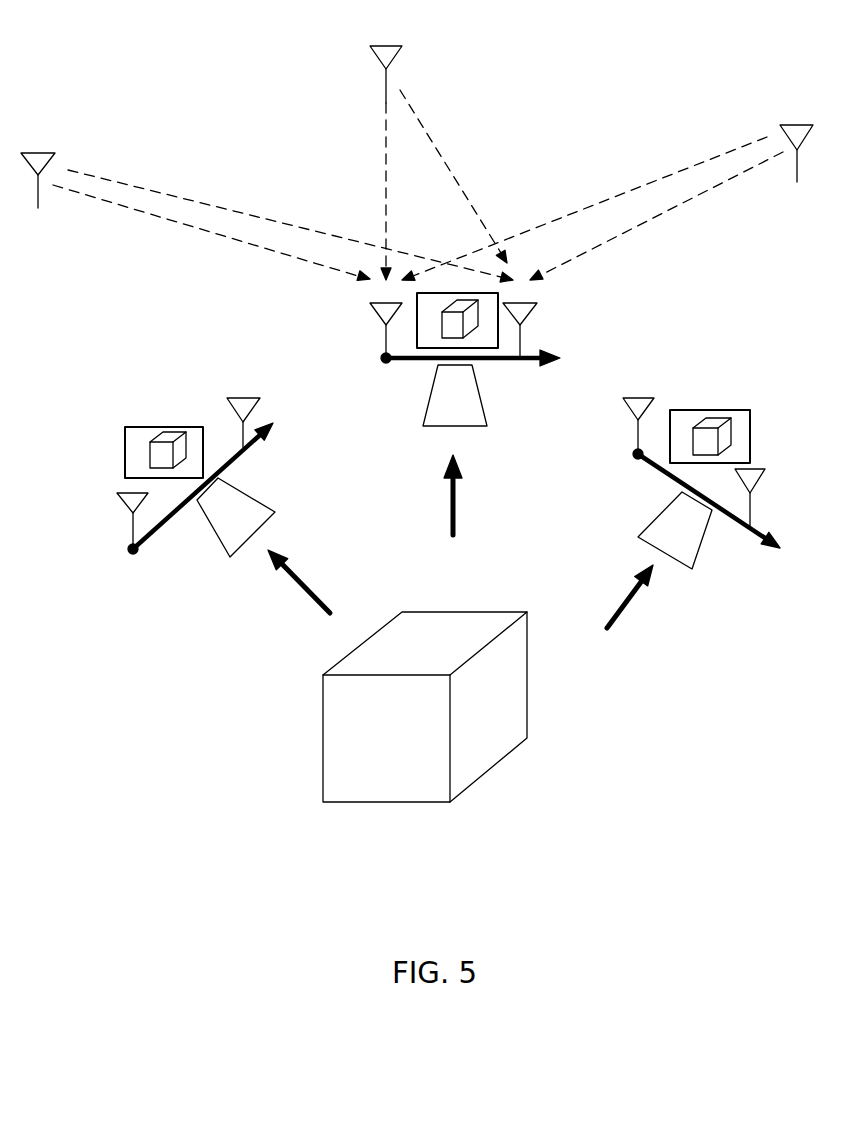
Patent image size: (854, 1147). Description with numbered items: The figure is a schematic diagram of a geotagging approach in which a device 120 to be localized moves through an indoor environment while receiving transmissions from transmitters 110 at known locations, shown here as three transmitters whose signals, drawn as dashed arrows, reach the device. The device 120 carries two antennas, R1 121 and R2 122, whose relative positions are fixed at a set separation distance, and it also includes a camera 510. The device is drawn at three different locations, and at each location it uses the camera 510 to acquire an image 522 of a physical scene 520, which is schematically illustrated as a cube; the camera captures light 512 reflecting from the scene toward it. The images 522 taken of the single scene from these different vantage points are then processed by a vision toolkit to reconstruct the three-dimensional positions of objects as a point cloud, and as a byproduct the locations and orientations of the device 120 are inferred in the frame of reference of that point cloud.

The transmitter 110 is at (33, 153).
The device 120 is at (380, 360).
The antenna R1 121 is at (370, 327).
The antenna R2 122 is at (538, 306).
The camera 510 is at (432, 393).
The light 512 is at (300, 595).
The physical scene 520 is at (508, 757).
The image 522 is at (124, 452).